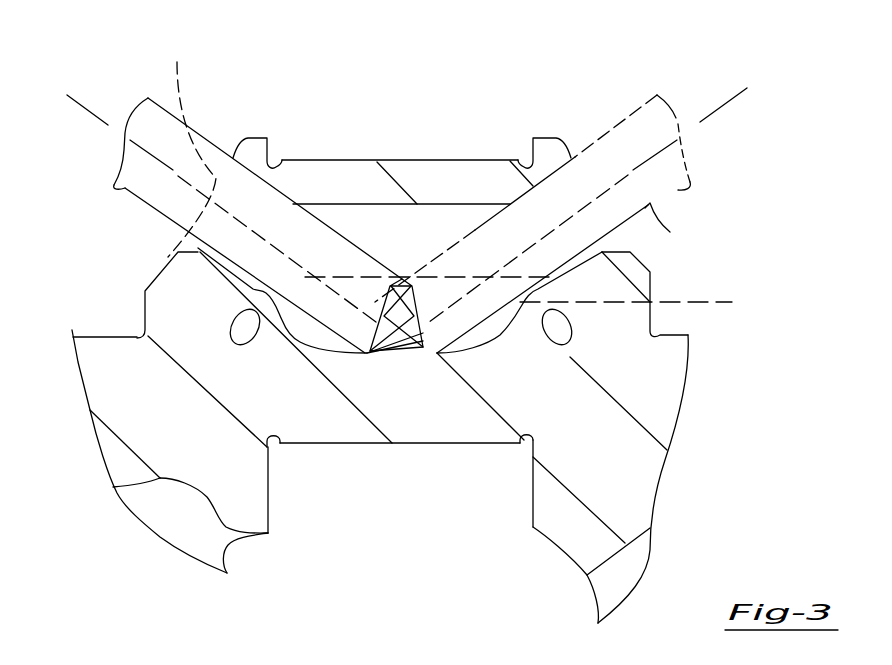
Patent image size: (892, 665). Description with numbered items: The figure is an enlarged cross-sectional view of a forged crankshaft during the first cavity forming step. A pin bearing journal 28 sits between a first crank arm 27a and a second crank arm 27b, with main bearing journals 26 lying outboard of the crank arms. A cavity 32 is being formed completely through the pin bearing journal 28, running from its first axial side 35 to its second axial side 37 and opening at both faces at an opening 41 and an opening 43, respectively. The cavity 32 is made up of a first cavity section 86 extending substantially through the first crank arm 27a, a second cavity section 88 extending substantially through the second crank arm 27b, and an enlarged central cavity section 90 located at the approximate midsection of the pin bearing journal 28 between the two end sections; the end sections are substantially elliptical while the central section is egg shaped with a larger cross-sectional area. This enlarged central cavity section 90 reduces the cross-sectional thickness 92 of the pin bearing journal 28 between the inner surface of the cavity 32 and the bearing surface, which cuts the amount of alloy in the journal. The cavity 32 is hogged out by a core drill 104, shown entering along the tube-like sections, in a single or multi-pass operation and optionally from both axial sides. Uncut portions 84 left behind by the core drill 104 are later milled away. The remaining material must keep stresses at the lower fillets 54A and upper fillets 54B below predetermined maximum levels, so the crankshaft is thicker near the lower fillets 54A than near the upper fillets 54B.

The main bearing journal 26 is at (97, 335).
The first crank arm 27a is at (173, 258).
The second crank arm 27b is at (631, 253).
The pin bearing journal 28 is at (402, 160).
The cavity 32 is at (444, 235).
The first axial side 35 is at (233, 158).
The second axial side 37 is at (571, 157).
The opening 41 is at (192, 152).
The opening 43 is at (602, 207).
The lower fillets 54A is at (280, 442).
The upper fillets 54B is at (280, 162).
The uncut portions 84 is at (343, 220).
The first cavity section 86 is at (97, 115).
The second cavity section 88 is at (723, 106).
The enlarged central cavity section 90 is at (529, 296).
The cross-sectional thickness 92 is at (403, 417).
The core drill 104 is at (125, 188).